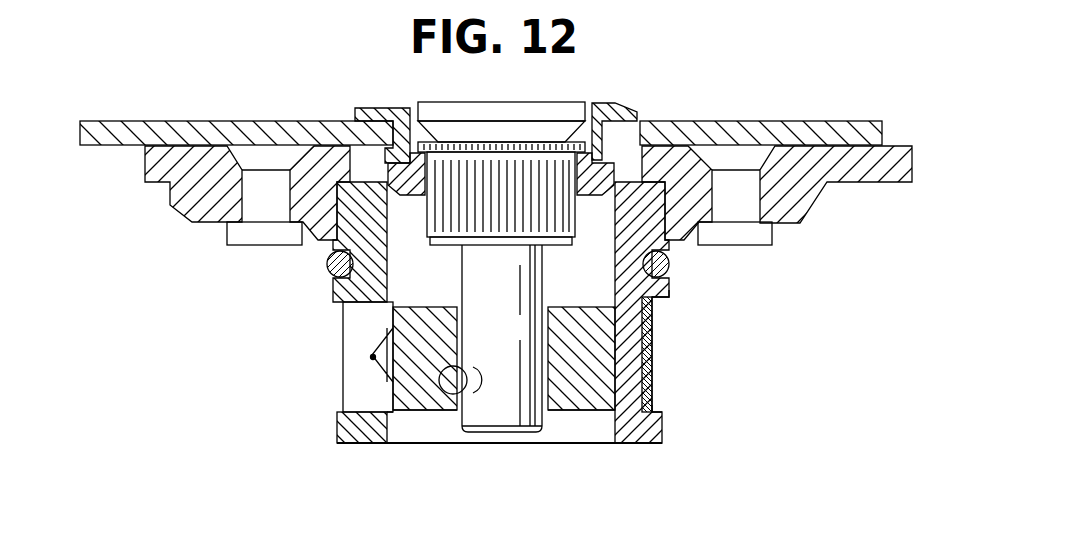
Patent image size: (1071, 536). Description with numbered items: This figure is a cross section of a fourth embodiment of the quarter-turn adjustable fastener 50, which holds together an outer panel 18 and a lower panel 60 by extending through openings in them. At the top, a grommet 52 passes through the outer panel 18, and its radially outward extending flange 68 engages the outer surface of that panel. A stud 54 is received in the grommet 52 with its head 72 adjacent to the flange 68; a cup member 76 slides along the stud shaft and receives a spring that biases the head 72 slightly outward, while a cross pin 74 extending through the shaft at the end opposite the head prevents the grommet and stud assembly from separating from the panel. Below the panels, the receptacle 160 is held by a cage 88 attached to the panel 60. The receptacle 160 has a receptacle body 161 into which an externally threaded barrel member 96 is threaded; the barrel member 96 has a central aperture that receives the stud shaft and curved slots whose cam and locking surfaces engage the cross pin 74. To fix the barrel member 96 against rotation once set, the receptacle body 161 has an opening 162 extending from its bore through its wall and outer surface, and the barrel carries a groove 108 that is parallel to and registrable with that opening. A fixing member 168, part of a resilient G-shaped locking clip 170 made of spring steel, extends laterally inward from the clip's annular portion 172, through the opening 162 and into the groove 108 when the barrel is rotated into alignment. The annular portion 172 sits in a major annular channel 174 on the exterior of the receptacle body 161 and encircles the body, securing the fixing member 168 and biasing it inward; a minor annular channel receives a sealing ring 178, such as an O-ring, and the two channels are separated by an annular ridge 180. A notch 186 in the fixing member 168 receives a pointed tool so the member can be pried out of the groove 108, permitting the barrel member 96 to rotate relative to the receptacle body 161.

The outer panel 18 is at (139, 121).
The adjustable fastener 50 is at (493, 259).
The grommet 52 is at (603, 107).
The stud 54 is at (553, 421).
The panel 60 is at (150, 183).
The radially outward extending flange 68 is at (378, 103).
The head 72 is at (512, 108).
The cross pin 74 is at (478, 378).
The cup member 76 is at (441, 246).
The cage 88 is at (808, 204).
The barrel member 96 is at (422, 413).
The groove 108 is at (383, 372).
The receptacle 160 is at (335, 427).
The receptacle body 161 is at (353, 447).
The opening 162 is at (370, 353).
The fixing member 168 is at (355, 313).
The locking clip 170 is at (655, 337).
The annular portion 172 is at (655, 373).
The major annular channel 174 is at (656, 412).
The sealing ring 178 is at (670, 263).
The annular ridge 180 is at (665, 293).
The notch 186 is at (367, 360).